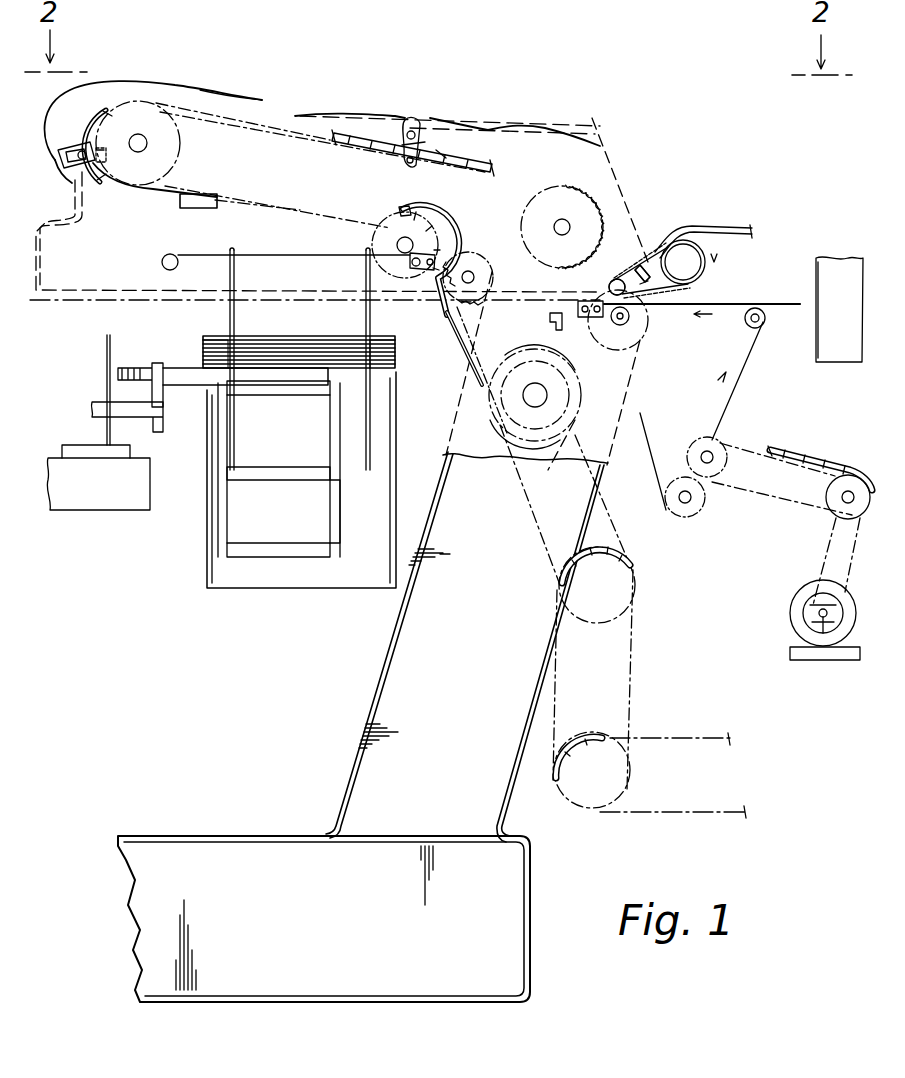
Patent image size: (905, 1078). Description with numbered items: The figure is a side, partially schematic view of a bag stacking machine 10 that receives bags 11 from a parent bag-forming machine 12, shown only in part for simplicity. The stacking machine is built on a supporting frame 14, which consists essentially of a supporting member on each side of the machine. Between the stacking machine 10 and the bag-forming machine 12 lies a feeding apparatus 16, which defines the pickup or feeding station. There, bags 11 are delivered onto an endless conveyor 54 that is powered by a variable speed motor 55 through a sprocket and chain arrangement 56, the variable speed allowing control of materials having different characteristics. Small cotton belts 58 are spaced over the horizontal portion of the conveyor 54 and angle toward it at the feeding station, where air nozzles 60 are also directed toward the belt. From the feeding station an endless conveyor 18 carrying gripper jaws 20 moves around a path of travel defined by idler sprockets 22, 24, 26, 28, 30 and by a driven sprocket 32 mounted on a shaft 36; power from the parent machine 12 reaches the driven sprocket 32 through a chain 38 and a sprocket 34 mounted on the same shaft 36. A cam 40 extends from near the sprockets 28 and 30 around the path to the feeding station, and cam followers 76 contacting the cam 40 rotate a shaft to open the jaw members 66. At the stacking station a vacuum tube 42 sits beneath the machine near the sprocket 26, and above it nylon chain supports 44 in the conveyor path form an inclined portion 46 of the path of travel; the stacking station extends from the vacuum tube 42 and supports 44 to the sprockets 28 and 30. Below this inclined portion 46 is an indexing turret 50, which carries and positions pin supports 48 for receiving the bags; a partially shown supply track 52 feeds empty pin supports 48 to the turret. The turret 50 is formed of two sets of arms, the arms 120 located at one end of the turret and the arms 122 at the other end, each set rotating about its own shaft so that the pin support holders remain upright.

The bag stacking machine 10 is at (622, 150).
The bags 11 is at (133, 80).
The parent machine 12 is at (834, 243).
The supporting frame 14 is at (246, 864).
The feeding apparatus 16 is at (736, 270).
The endless conveyor 18 is at (357, 126).
The gripper jaws 20 is at (437, 123).
The idler sprocket 22 is at (640, 345).
The idler sprocket 24 is at (590, 188).
The idler sprocket 26 is at (158, 112).
The idler sprocket 28 is at (392, 220).
The idler sprocket 30 is at (478, 258).
The driven sprocket 32 is at (486, 431).
The sprocket 34 is at (540, 420).
The shaft 36 is at (530, 393).
The chain 38 is at (645, 660).
The cam 40 is at (549, 319).
The vacuum tube 42 is at (158, 262).
The nylon chain supports 44 is at (205, 194).
The inclined portion 46 is at (266, 198).
The pin supports 48 is at (186, 370).
The indexing turret 50 is at (250, 493).
The supply track 52 is at (76, 498).
The endless conveyor 54 is at (732, 365).
The variable speed motor 55 is at (802, 615).
The sprocket and chain arrangement 56 is at (762, 497).
The cotton belts 58 is at (647, 252).
The air nozzles 60 is at (634, 275).
The jaw members 66 is at (413, 284).
The cam followers 76 is at (443, 166).
The arms 120 is at (212, 545).
The arms 122 is at (336, 510).